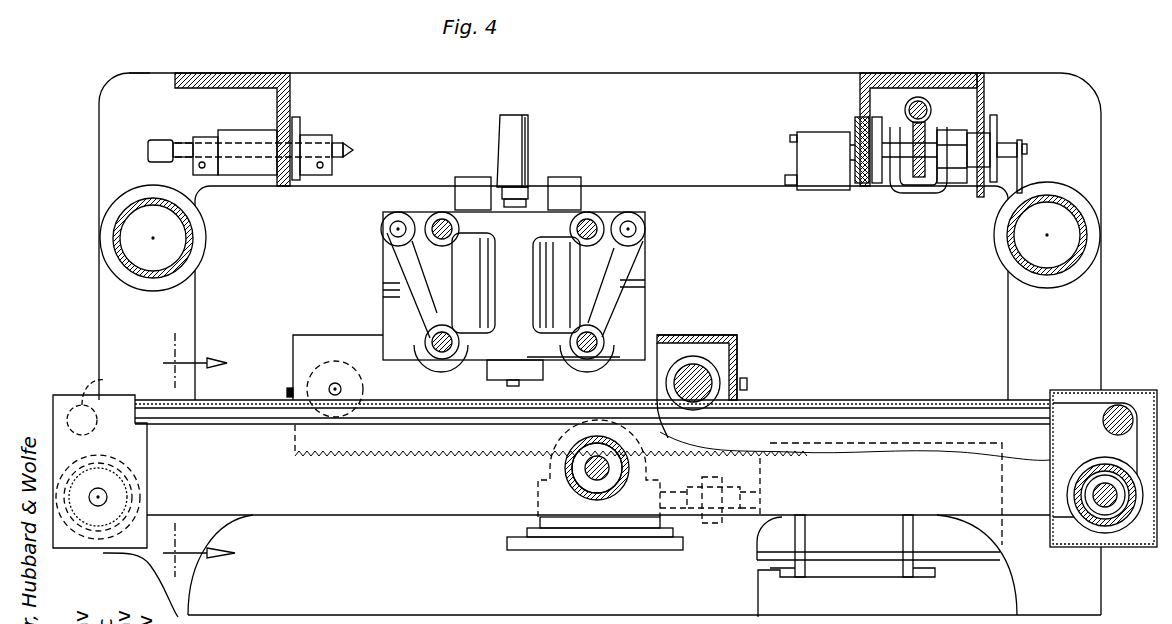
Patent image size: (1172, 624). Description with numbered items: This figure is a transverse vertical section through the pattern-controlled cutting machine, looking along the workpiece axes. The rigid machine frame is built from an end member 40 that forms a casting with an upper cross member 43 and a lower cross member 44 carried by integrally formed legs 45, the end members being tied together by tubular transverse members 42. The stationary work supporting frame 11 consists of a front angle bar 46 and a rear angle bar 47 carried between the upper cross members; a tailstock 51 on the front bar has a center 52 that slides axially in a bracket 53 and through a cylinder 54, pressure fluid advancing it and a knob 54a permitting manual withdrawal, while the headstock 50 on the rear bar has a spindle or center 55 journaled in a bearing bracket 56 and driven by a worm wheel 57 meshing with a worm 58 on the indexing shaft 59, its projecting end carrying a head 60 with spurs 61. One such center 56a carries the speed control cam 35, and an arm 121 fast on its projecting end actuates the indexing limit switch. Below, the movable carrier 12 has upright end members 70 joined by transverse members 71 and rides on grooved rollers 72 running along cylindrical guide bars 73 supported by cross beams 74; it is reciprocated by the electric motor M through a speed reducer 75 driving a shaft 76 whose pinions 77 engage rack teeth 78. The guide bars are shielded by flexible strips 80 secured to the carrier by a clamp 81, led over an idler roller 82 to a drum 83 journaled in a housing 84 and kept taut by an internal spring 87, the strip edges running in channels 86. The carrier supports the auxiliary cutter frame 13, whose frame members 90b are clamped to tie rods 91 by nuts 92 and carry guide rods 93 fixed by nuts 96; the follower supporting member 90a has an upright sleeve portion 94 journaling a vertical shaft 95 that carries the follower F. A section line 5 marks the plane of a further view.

The section line 5- 5 is at (189, 455).
The work supporting frame 11 is at (400, 70).
The carrier 12 is at (746, 341).
The auxiliary frame 13 is at (446, 200).
The speed control cam 35 is at (998, 124).
The end member 40 is at (735, 73).
The tubular transverse members 42 is at (115, 240).
The upper cross member 43 is at (818, 73).
The lower cross member 44 is at (248, 520).
The legs 45 is at (185, 316).
The front angle bar 46 is at (275, 73).
The rear angle bar 47 is at (960, 73).
The headstock 50 is at (850, 128).
The tailstock 51 is at (322, 132).
The center 52 is at (350, 152).
The bracket 53 is at (300, 120).
The cylinder 54 is at (250, 135).
The knob 54a is at (160, 140).
The spindle 55 is at (853, 152).
The bearing bracket 56 is at (885, 182).
The center 56a is at (1008, 147).
The worm wheel 57 is at (919, 178).
The worm 58 is at (932, 110).
The indexing shaft 59 is at (926, 102).
The head 60 is at (830, 191).
The spurs 61 is at (790, 139).
The upright end members 70 is at (648, 318).
The transverse members 71 is at (738, 372).
The grooved rollers 72 is at (343, 372).
The cylindrical guide bars 73 is at (920, 412).
The cross beams 74 is at (457, 515).
The speed reducer 75 is at (580, 532).
The shaft 76 is at (588, 478).
The pinions 77 is at (615, 486).
The rack teeth 78 is at (385, 465).
The strips 80 is at (90, 400).
The clamp 81 is at (289, 394).
The idler roller 82 is at (72, 408).
The drum 83 is at (110, 470).
The housing 84 is at (53, 400).
The channels 86 is at (235, 400).
The spring 87 is at (1108, 478).
The follower supporting member 90a is at (600, 292).
The frame members 90b is at (395, 268).
The tie rods 91 is at (440, 226).
The clamping nuts 92 is at (600, 356).
The guide rods 93 is at (390, 230).
The sleeve portion 94 is at (540, 296).
The shaft 95 is at (520, 186).
The nuts 96 is at (392, 218).
The arm 121 is at (1024, 182).
The follower F is at (530, 130).
The variable speed electric motor M is at (765, 548).